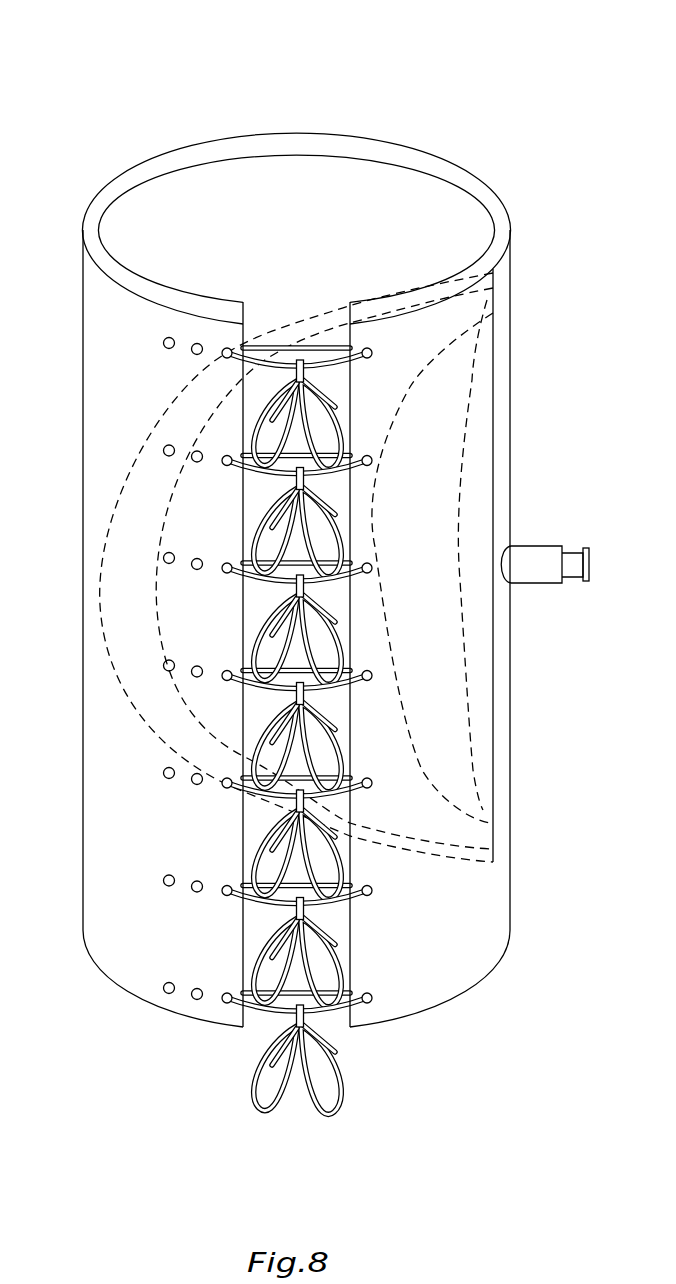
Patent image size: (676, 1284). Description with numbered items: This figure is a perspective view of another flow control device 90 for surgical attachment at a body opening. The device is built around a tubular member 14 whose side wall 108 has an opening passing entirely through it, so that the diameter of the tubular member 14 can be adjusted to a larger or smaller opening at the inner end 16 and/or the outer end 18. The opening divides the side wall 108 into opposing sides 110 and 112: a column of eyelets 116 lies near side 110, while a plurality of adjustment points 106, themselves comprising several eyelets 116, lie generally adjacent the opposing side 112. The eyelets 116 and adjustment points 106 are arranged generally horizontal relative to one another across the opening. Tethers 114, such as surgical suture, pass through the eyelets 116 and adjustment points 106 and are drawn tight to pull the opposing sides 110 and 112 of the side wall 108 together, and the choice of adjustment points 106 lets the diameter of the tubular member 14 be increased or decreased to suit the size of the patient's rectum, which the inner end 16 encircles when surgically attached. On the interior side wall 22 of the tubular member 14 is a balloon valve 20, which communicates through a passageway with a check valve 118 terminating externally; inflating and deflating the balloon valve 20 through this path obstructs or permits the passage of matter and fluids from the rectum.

The container assembly 90 is at (486, 92).
The tubular member 14 is at (512, 387).
The inner end 16 is at (162, 161).
The outer end 18 is at (148, 1005).
The balloon valve 20 is at (335, 292).
The interior side wall 22 is at (120, 212).
The adjustment points 106 is at (223, 564).
The side wall 108 is at (127, 367).
The side 110 is at (352, 956).
The side 112 is at (245, 834).
The tethers 114 is at (263, 1017).
The eyelets 116 is at (372, 462).
The check valve 118 is at (545, 578).